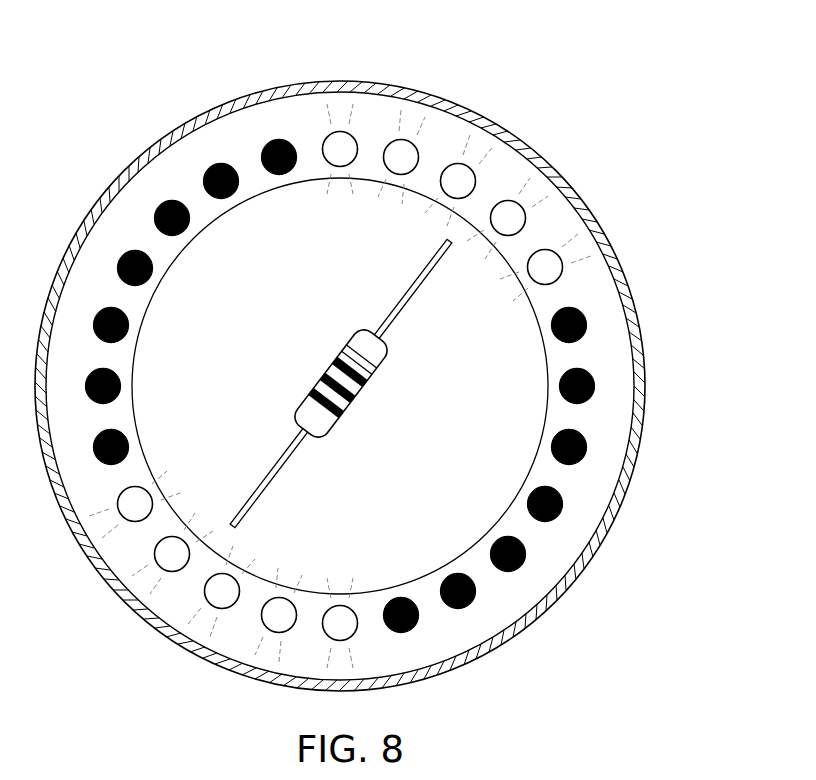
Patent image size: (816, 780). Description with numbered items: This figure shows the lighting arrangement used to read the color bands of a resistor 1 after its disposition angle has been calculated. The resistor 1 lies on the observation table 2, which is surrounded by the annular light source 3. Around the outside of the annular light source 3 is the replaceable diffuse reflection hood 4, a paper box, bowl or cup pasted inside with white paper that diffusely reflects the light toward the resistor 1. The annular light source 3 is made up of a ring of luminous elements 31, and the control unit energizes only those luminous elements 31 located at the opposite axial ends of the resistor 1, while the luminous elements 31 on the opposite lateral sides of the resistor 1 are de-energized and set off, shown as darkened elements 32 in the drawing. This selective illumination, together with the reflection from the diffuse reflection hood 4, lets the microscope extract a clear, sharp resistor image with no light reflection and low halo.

The resistor 1 is at (358, 390).
The observation table 2 is at (493, 432).
The annular light source 3 is at (413, 347).
The luminous elements 31 is at (393, 150).
The light emitting diodes (unlit) 32 is at (218, 165).
The diffuse reflection hood 4 is at (544, 122).